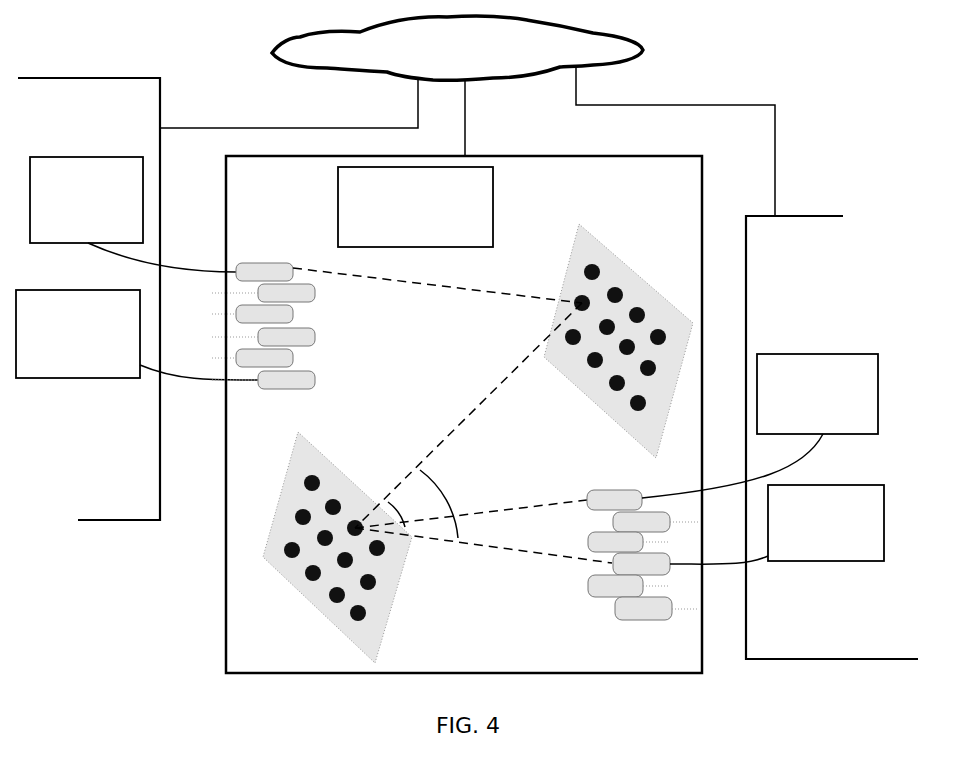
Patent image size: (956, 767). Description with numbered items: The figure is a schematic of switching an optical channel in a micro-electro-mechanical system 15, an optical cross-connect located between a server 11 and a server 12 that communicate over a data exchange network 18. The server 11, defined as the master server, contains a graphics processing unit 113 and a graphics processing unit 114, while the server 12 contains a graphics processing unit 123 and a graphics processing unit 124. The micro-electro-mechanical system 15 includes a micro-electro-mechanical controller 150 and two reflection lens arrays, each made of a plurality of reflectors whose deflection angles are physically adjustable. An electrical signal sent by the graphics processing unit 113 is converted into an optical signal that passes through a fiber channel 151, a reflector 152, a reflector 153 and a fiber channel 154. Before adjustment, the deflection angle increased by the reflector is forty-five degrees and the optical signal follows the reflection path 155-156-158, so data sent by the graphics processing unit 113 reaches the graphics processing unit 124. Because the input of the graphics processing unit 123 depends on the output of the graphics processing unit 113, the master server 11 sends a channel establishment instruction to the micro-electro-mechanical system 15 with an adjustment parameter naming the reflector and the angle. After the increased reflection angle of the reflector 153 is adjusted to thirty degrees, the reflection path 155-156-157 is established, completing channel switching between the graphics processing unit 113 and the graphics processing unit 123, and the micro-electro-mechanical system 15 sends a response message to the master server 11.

The server 11 is at (128, 77).
The server 12 is at (813, 215).
The micro-electro-mechanical system 15 is at (604, 156).
The data exchange network 18 is at (620, 36).
The graphics processing unit 113 is at (88, 157).
The graphics processing unit 114 is at (86, 290).
The graphics processing unit 123 is at (855, 354).
The graphics processing unit 124 is at (843, 485).
The micro-electro-mechanical controller 150 is at (494, 200).
The fiber channel 151 is at (258, 263).
The reflector 152 is at (580, 297).
The reflector 153 is at (355, 520).
The fiber channel 154 is at (612, 567).
The reflection path segment 155 is at (437, 282).
The reflection path segment 156 is at (468, 415).
The reflection path segment 157 is at (471, 505).
The reflection path segment 158 is at (483, 545).